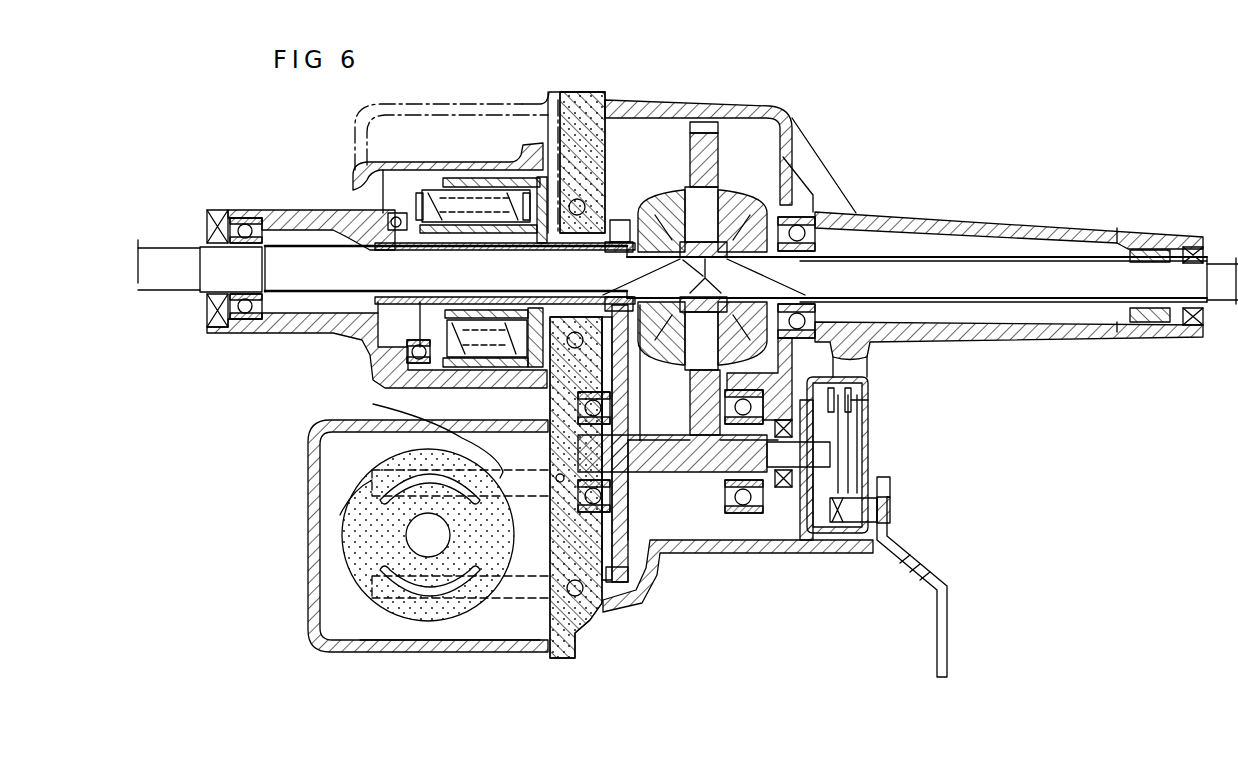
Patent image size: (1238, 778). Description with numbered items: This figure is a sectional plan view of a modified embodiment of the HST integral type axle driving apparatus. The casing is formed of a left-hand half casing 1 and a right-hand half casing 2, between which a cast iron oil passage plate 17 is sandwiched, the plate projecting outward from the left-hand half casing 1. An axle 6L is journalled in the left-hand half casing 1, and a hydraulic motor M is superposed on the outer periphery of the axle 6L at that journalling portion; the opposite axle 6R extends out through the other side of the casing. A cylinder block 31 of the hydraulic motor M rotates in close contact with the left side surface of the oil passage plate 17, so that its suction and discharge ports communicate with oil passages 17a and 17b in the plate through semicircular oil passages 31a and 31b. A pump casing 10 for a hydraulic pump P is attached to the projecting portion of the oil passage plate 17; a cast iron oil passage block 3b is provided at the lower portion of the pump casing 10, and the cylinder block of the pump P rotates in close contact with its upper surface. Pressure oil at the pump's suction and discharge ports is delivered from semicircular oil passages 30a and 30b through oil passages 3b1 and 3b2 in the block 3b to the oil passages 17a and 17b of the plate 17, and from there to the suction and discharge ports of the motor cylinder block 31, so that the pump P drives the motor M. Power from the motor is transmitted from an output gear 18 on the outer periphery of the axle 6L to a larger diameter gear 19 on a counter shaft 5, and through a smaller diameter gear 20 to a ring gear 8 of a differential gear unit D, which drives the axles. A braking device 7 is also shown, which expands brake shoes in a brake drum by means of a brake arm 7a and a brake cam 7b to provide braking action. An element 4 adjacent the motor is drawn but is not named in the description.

The left-hand half casing 1 is at (316, 338).
The right-hand half casing 2 is at (748, 107).
The cast iron oil passage block 3b is at (358, 593).
The oil passage 3b1 is at (513, 587).
The oil passage 3b2 is at (439, 442).
The clutch 4 is at (418, 306).
The counter shaft 5 is at (718, 466).
The axle 6L is at (170, 292).
The right axle 6R is at (1003, 310).
The braking device 7 is at (843, 457).
The brake arm 7a is at (947, 627).
The brake cam 7b is at (893, 510).
The ring gear 8 is at (720, 165).
The pump casing 10 is at (387, 650).
The cast iron oil passage plate 17 is at (572, 636).
The oil passage 17a is at (620, 366).
The oil passage 17b is at (580, 205).
The output gear 18 is at (618, 228).
The larger diameter gear 19 is at (628, 400).
The smaller diameter gear 20 is at (675, 478).
The semicircular oil passage 30a is at (438, 587).
The semicircular oil passage 30b is at (340, 515).
The cylinder block 31 is at (458, 378).
The semicircular oil passage 31a is at (530, 380).
The semicircular oil passage 31b is at (560, 130).
The differential gear unit D is at (770, 140).
The hydraulic motor M is at (458, 158).
The hydraulic pump P is at (322, 595).